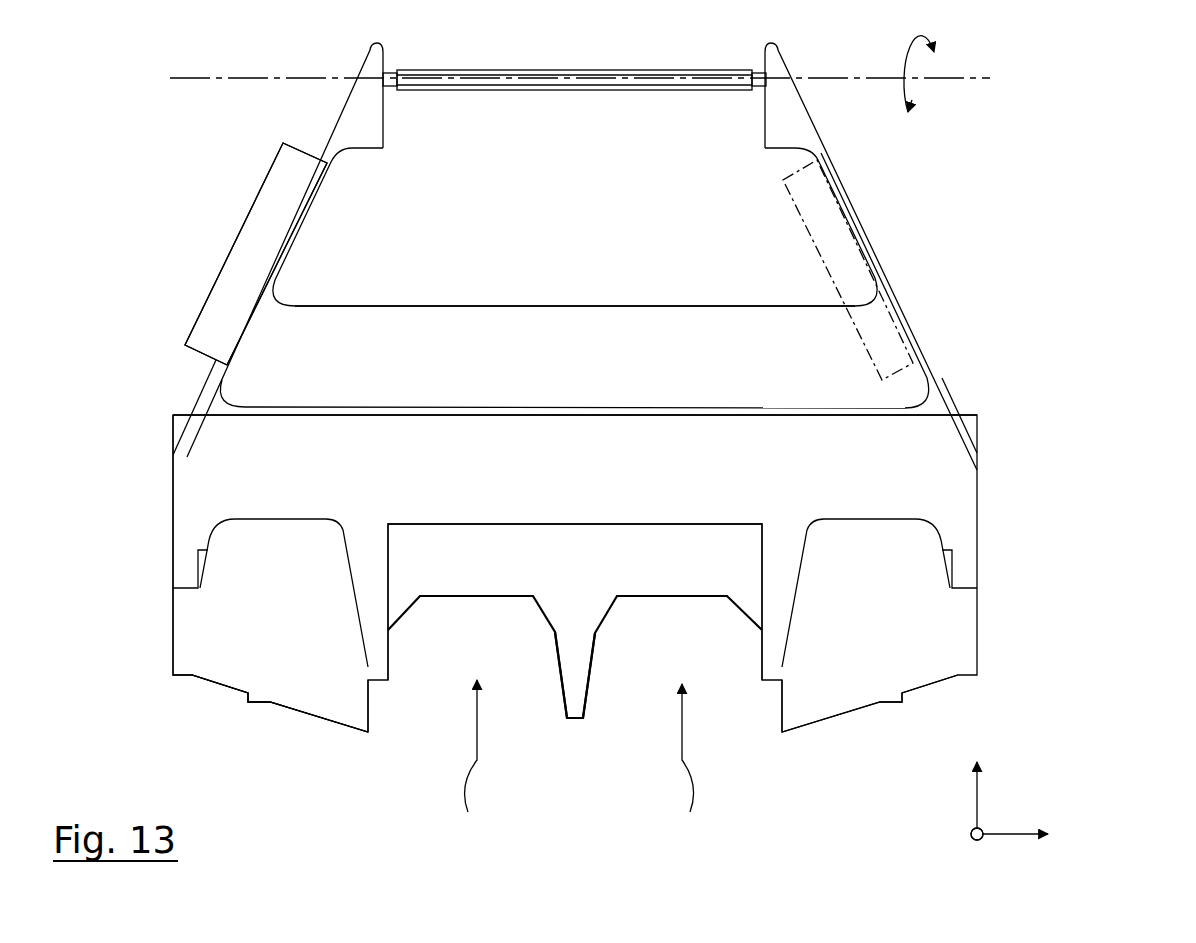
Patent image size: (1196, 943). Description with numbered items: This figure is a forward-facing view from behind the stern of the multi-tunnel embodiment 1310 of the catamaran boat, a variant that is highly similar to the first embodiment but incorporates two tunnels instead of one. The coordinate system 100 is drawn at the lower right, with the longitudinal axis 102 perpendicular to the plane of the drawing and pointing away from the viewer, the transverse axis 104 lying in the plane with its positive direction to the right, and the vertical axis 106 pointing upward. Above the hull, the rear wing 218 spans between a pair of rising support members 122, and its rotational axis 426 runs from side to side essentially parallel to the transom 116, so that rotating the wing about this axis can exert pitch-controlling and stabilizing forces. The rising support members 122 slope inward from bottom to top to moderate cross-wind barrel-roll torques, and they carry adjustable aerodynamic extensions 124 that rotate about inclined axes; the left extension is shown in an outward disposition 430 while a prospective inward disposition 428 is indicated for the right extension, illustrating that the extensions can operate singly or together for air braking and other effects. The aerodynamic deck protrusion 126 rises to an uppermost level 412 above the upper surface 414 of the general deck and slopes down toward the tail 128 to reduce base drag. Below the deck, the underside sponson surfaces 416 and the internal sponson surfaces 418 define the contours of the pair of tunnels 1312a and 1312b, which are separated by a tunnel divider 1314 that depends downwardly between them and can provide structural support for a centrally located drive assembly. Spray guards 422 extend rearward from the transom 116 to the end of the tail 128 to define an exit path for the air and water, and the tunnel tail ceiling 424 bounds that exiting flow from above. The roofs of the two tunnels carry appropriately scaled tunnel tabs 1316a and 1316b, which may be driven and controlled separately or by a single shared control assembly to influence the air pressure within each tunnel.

The coordinate system 100 is at (1045, 825).
The longitudinal axis 102 is at (975, 841).
The transverse axis 104 is at (1003, 835).
The vertical axis 106 is at (977, 806).
The transom 116 is at (192, 652).
The rising support members 122 is at (822, 137).
The adjustable aerodynamic extensions 124 is at (262, 232).
The aerodynamic deck protrusion 126 is at (450, 305).
The tail 128 is at (943, 460).
The rear wing 218 is at (628, 68).
The uppermost level of the aerodynamic deck protrusion 412 is at (636, 300).
The upper surface of the general deck 414 is at (714, 407).
The underside sponson surfaces 416 is at (297, 712).
The internal sponson surfaces 418 is at (373, 698).
The spray guards 422 is at (352, 573).
The tunnel tail ceiling 424 is at (540, 523).
The rotational axis 426 is at (832, 77).
The inward disposition 428 is at (798, 218).
The outward disposition 430 is at (207, 293).
The multi-tunnel embodiment 1310 is at (1014, 254).
The tunnel 1312a is at (423, 770).
The tunnel 1312b is at (730, 767).
The tunnel divider 1314 is at (577, 722).
The tunnel tab 1316a is at (440, 595).
The tunnel tab 1316b is at (706, 595).